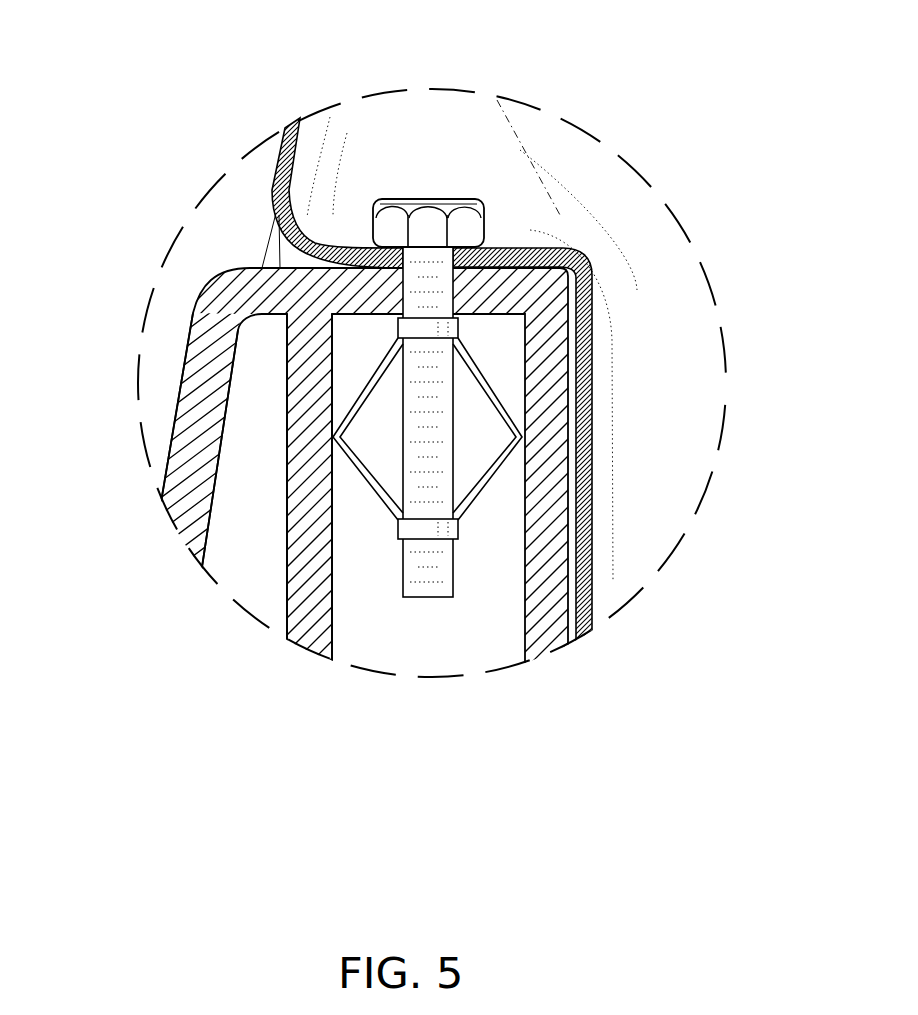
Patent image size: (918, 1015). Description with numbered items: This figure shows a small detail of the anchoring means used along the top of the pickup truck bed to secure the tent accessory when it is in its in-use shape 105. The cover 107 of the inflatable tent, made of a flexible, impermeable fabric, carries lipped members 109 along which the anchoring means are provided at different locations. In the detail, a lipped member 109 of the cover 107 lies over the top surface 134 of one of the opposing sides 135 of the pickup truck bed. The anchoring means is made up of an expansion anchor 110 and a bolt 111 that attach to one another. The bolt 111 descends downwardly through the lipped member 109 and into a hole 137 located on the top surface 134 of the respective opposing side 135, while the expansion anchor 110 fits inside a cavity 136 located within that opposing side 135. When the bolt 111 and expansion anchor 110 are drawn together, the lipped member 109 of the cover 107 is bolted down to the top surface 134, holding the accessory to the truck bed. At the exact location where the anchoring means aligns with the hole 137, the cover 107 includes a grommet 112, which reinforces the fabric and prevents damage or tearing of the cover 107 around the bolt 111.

The in-use shape 105 is at (167, 200).
The cover 107 is at (300, 153).
The lipped member 109 is at (508, 248).
The expansion anchor 110 is at (477, 500).
The bolt 111 is at (437, 213).
The grommet 112 is at (470, 262).
The top surface 134 is at (272, 217).
The opposing side 135 is at (177, 398).
The cavity 136 is at (362, 612).
The hole 137 is at (400, 292).